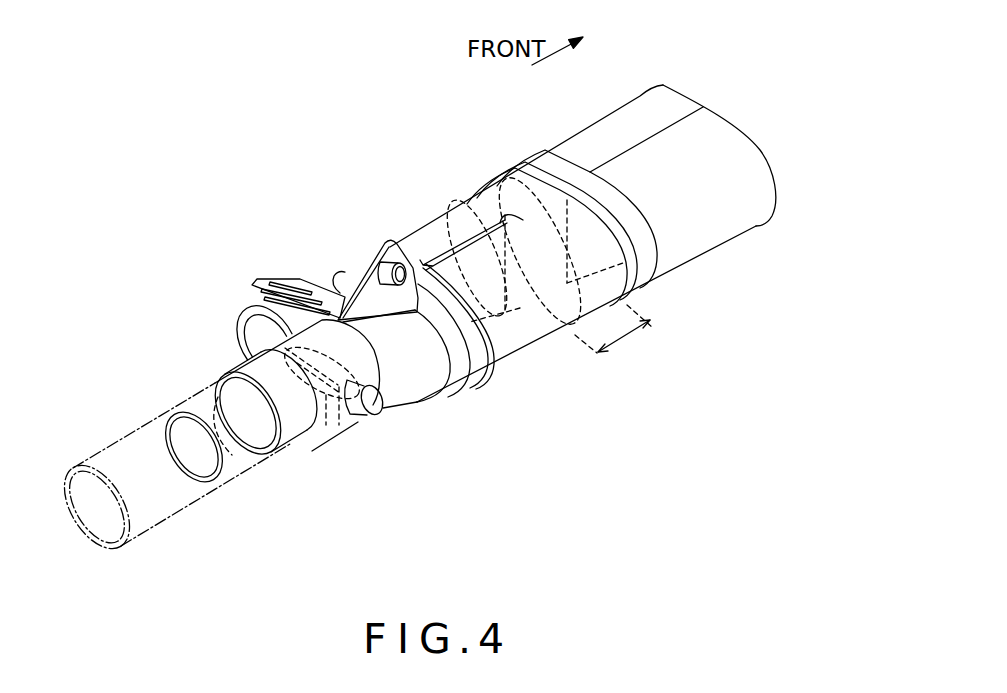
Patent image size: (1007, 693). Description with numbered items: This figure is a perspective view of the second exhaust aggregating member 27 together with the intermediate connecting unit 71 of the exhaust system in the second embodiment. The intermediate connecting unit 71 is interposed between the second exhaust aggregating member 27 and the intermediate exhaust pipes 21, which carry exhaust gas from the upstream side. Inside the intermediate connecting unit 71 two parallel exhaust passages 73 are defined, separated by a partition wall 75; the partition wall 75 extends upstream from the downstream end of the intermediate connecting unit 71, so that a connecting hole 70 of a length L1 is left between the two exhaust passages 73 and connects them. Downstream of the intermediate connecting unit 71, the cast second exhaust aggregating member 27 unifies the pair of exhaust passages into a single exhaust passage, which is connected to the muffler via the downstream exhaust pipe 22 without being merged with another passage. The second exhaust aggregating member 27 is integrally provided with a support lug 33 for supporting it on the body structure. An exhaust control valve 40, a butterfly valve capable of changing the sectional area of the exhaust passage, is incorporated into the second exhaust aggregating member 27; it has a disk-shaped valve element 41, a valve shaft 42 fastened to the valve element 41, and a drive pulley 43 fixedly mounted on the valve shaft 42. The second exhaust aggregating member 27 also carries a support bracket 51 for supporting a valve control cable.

The intermediate exhaust pipe 21 is at (597, 121).
The downstream exhaust pipe 22 is at (165, 522).
The second exhaust aggregating member 27 is at (416, 405).
The support lug 33 is at (368, 258).
The exhaust control valve 40 is at (290, 383).
The valve element 41 is at (337, 387).
The valve shaft 42 is at (340, 403).
The drive pulley 43 is at (250, 323).
The support bracket 51 is at (262, 287).
The connecting hole 70 is at (548, 222).
The intermediate connecting unit 71 is at (447, 190).
The exhaust passage 73 is at (433, 240).
The partition wall 75 is at (530, 318).
The length L1 is at (617, 335).